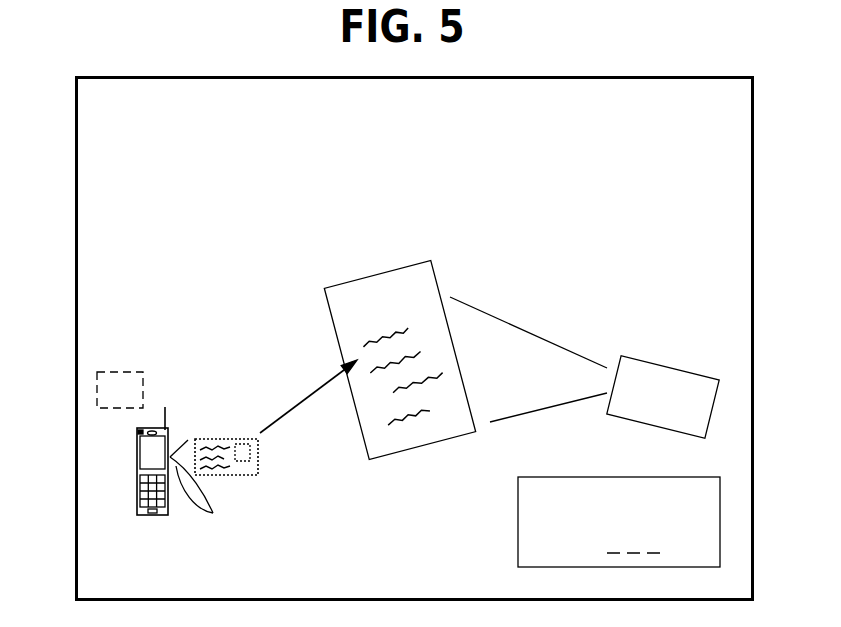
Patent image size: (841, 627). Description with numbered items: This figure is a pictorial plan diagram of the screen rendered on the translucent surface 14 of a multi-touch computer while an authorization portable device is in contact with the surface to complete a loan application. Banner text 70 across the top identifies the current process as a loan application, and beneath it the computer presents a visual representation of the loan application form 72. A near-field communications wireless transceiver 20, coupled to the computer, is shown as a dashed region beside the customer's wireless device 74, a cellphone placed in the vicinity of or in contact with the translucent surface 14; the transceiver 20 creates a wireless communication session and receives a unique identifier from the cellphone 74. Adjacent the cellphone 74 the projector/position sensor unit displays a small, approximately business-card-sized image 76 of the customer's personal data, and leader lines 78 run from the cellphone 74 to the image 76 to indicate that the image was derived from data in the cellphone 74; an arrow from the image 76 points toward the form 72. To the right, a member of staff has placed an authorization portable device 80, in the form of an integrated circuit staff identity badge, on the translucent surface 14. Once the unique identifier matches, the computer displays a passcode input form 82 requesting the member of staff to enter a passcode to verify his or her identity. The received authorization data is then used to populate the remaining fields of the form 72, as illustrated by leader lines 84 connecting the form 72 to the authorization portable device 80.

The translucent surface 14 is at (755, 302).
The near-field communications wireless transceiver 20 is at (97, 392).
The banner text 70 is at (572, 132).
The loan application form 72 is at (328, 310).
The wireless device 74 is at (136, 507).
The image of the personal data 76 is at (258, 463).
The leader lines 78 is at (213, 513).
The authorization portable device 80 is at (672, 363).
The passcode input form 82 is at (518, 523).
The leader lines 84 is at (556, 350).